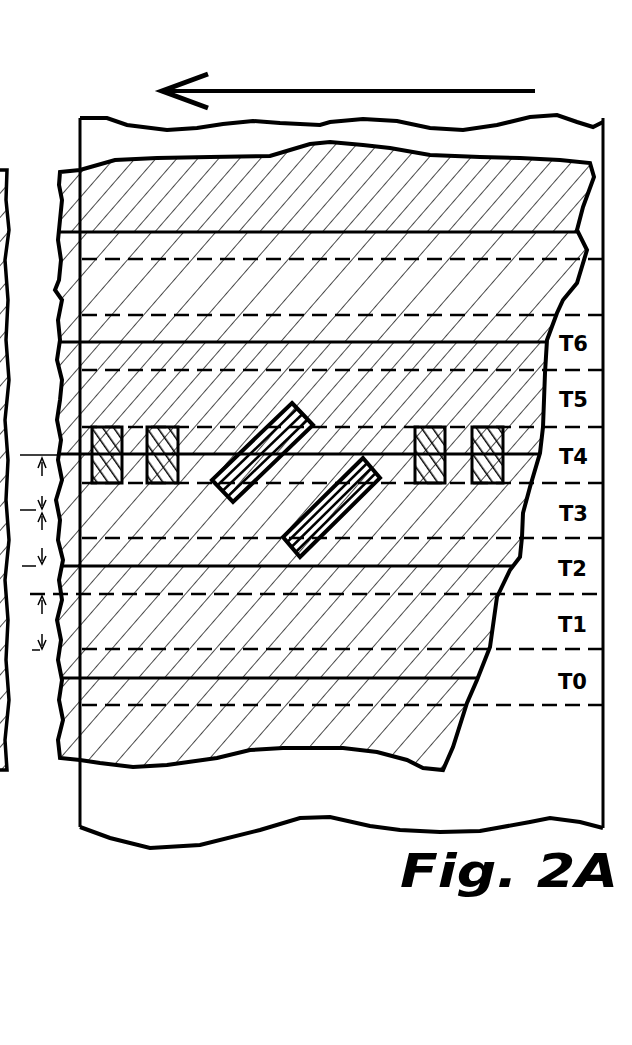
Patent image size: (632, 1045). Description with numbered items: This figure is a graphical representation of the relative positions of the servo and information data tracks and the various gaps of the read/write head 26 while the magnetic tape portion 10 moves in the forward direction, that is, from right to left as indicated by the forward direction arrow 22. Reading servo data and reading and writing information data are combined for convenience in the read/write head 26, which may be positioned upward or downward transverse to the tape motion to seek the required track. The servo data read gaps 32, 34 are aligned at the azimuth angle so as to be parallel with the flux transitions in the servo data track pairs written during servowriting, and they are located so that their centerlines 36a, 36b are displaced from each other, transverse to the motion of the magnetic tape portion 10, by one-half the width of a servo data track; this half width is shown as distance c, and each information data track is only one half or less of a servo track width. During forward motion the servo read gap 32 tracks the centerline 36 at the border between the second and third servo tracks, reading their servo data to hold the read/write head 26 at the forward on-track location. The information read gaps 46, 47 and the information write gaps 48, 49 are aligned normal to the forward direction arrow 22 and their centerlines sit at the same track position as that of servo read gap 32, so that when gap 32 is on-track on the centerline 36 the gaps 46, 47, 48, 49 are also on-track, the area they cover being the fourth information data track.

The magnetic tape portion 10 is at (140, 160).
The forward direction arrow 22 is at (362, 91).
The read/write head 26 is at (117, 840).
The servo data read gap 32 is at (290, 408).
The servo data read gap 34 is at (363, 503).
The centerline 36 is at (34, 529).
The centerline 36a is at (378, 454).
The centerline 36b is at (282, 512).
The information read gap 46 is at (428, 427).
The information read gap 47 is at (104, 427).
The information write gap 48 is at (484, 427).
The information write gap 49 is at (160, 427).